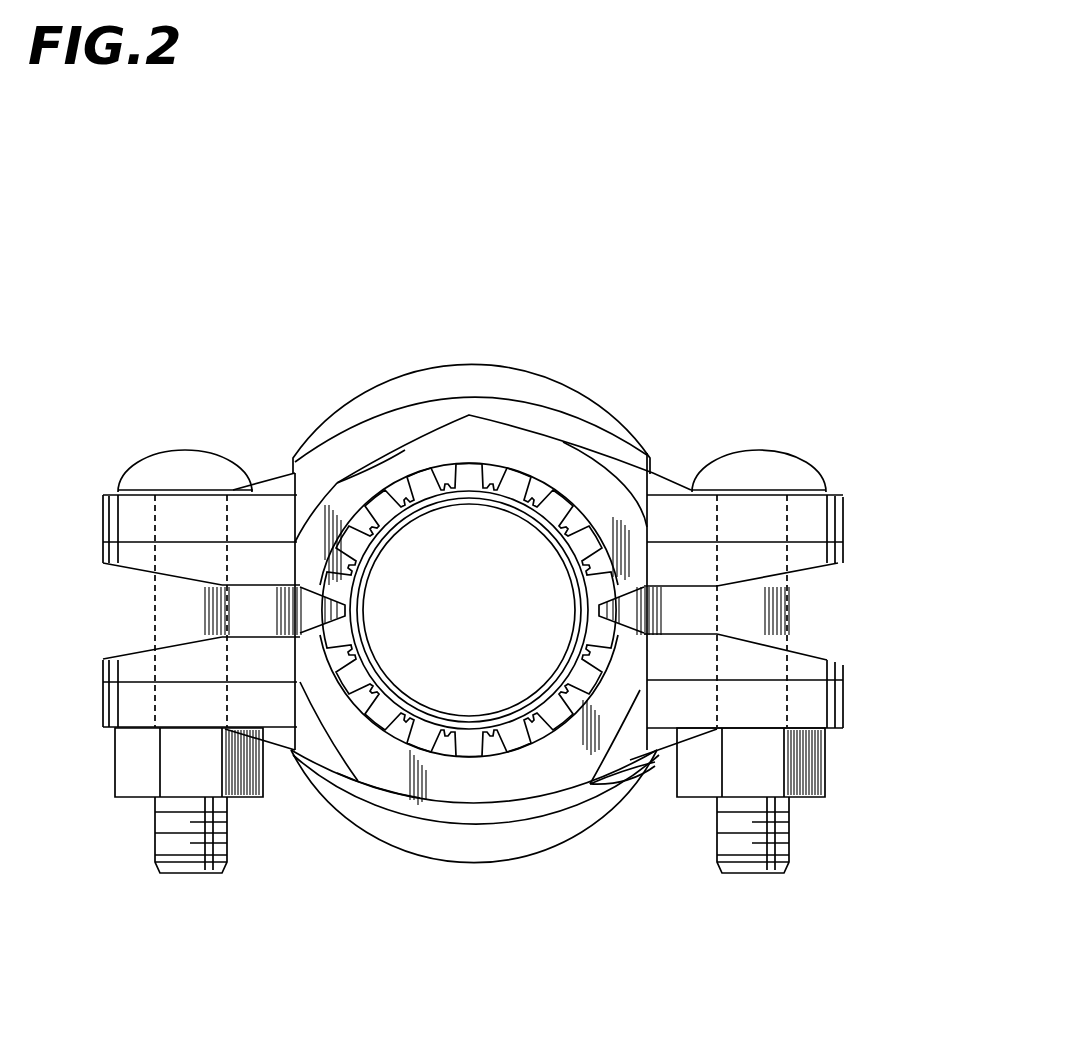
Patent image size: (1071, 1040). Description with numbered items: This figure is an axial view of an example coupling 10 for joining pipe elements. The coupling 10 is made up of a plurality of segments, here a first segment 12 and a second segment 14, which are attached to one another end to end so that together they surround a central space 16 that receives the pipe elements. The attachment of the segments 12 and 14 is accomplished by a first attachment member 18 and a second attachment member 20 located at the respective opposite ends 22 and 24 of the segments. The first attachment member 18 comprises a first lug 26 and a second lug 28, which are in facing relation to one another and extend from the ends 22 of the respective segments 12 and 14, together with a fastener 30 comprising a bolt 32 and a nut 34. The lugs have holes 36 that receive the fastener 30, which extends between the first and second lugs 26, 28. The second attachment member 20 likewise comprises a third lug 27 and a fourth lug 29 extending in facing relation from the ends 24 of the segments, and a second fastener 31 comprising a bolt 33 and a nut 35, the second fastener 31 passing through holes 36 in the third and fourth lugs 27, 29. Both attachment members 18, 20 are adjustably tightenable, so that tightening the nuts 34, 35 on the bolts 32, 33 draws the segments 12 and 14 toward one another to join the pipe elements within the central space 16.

The coupling 10 is at (480, 591).
The first segment 12 is at (572, 815).
The second segment 14 is at (552, 383).
The central space 16 is at (478, 611).
The first attachment member 18 is at (191, 654).
The second attachment member 20 is at (775, 631).
The end 22 is at (350, 480).
The end 24 is at (625, 485).
The first lug 26 is at (105, 712).
The third lug 27 is at (818, 700).
The second lug 28 is at (122, 530).
The fourth lug 29 is at (838, 503).
The fastener 30 is at (275, 611).
The second fastener 31 is at (753, 452).
The bolt 32 is at (186, 611).
The bolt 33 is at (770, 603).
The nut 34 is at (250, 785).
The nut 35 is at (803, 770).
The holes 36 is at (118, 498).